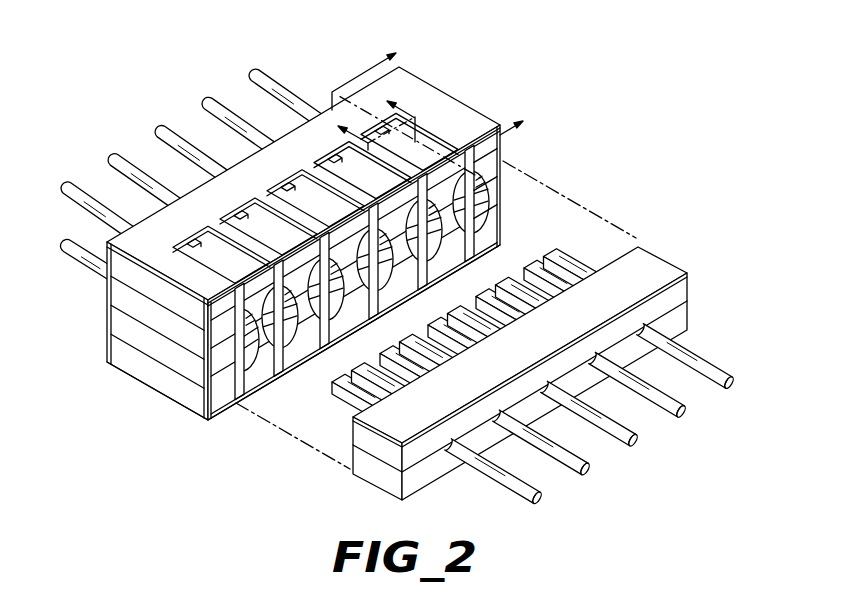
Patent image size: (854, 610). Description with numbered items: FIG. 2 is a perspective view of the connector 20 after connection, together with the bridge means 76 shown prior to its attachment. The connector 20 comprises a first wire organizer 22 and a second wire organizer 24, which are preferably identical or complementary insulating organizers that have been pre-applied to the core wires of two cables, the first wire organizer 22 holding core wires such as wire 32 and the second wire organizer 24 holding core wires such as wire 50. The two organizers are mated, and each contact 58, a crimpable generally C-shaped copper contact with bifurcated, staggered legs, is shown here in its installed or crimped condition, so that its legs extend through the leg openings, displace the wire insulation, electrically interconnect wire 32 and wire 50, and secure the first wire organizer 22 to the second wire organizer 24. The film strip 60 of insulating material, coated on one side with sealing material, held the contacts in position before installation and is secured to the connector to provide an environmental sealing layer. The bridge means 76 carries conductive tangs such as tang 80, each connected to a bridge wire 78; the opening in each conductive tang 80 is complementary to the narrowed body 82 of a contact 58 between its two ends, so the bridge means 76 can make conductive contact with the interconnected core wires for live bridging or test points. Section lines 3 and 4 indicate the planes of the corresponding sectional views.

The connector 20 is at (472, 105).
The first wire organizer 22 is at (148, 298).
The second wire organizer 24 is at (175, 370).
The wire 32 is at (77, 192).
The wire 50 is at (81, 258).
The contact 58 is at (257, 363).
The film strip 60 is at (218, 413).
The bridge means 76 is at (686, 260).
The bridge wire 78 is at (714, 373).
The conductive tang 80 is at (560, 268).
The narrowed body 82 is at (455, 221).
The section line 3- 3 is at (437, 106).
The section line 4- 4 is at (368, 114).